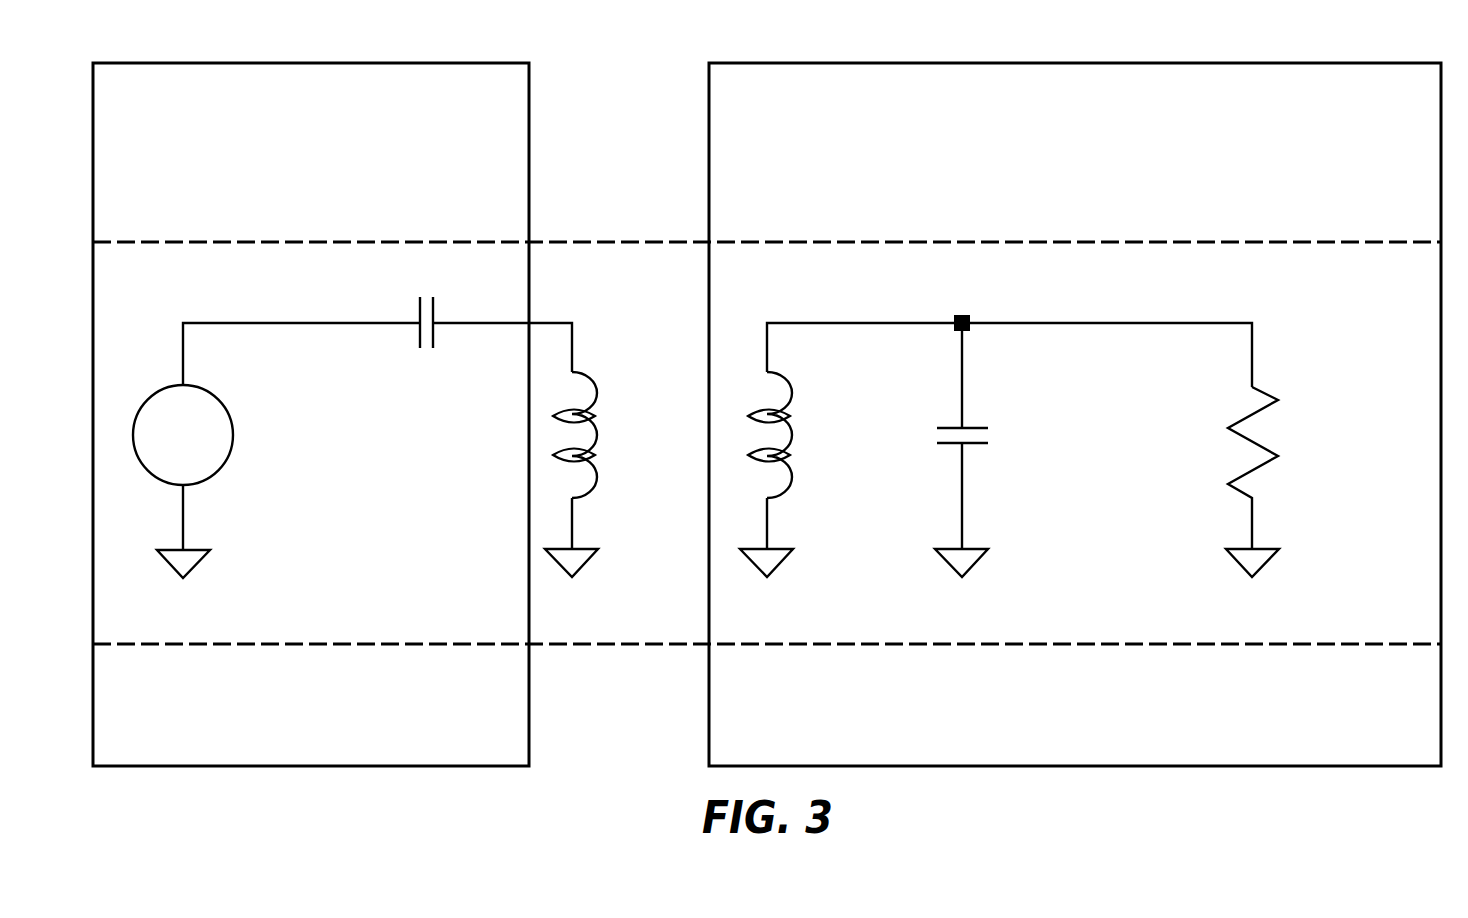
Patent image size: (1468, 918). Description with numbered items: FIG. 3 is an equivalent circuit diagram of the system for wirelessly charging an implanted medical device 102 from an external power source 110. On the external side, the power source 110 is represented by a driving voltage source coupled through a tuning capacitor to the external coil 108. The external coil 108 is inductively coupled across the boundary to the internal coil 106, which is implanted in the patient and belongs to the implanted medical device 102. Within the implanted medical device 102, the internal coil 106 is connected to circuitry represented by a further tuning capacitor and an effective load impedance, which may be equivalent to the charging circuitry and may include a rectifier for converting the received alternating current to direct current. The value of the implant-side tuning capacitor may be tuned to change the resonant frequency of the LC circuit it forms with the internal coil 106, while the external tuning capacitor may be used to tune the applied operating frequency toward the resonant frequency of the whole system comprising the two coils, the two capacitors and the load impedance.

The power source 110 is at (290, 132).
The implanted medical device 102 is at (1054, 132).
The external coil 108 is at (605, 474).
The internal coil 106 is at (795, 474).